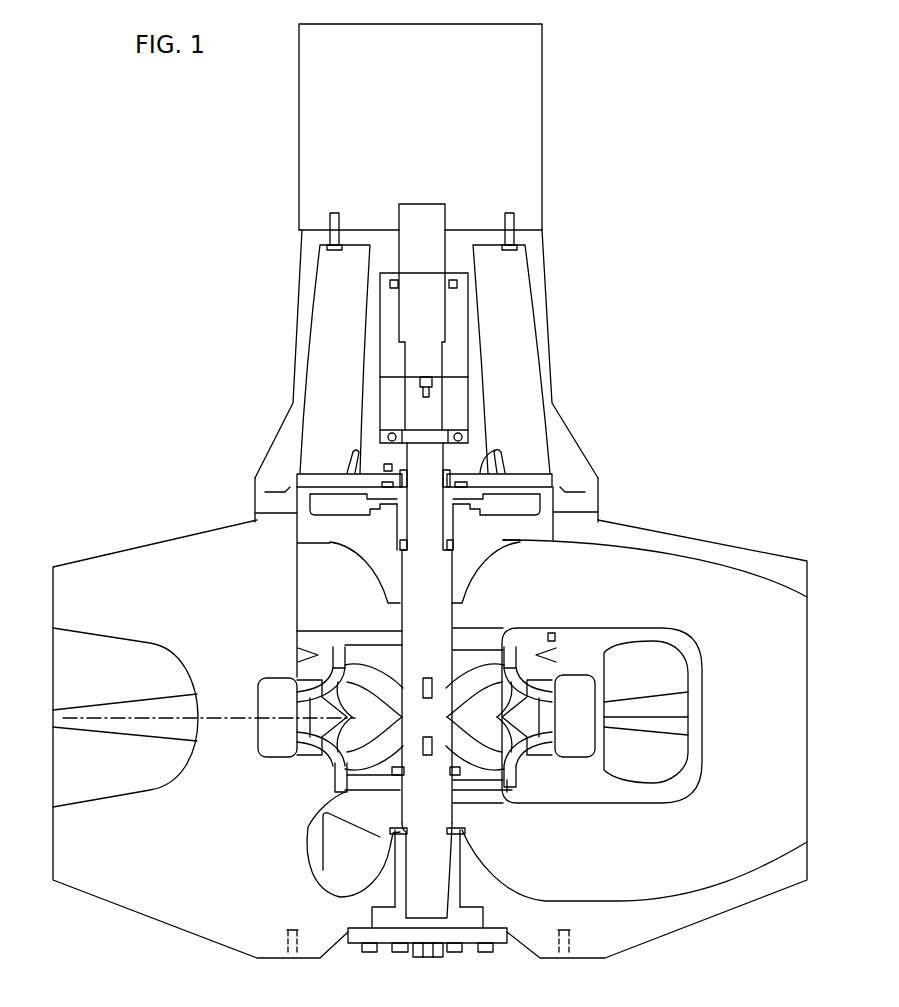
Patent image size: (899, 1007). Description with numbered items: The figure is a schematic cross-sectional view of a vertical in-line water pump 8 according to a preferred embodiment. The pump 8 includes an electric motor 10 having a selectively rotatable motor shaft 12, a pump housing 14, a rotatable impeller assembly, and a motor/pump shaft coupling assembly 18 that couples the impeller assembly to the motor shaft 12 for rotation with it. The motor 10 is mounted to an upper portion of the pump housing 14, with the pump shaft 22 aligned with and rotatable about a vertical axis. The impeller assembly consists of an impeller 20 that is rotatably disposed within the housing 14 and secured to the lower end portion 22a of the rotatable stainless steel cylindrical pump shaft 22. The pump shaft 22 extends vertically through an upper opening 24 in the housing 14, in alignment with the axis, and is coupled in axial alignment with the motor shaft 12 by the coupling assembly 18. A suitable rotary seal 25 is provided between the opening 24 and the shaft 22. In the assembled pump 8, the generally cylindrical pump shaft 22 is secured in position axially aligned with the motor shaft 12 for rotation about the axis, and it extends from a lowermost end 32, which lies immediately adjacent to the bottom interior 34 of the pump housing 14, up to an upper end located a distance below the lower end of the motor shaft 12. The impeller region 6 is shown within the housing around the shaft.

The impeller 6 is at (444, 668).
The vertical in-line water pump 8 is at (600, 282).
The electric motor 10 is at (431, 122).
The motor shaft 12 is at (437, 262).
The pump housing 14 is at (229, 899).
The motor/pump shaft coupling assembly 18 is at (458, 353).
The impeller 20 is at (335, 767).
The pump shaft 22 is at (467, 680).
The lower end portion of the pump shaft 22a is at (460, 793).
The upper opening 24 is at (474, 476).
The rotary seal 25 is at (386, 463).
The lowermost end 32 is at (480, 913).
The bottom interior 34 is at (372, 918).